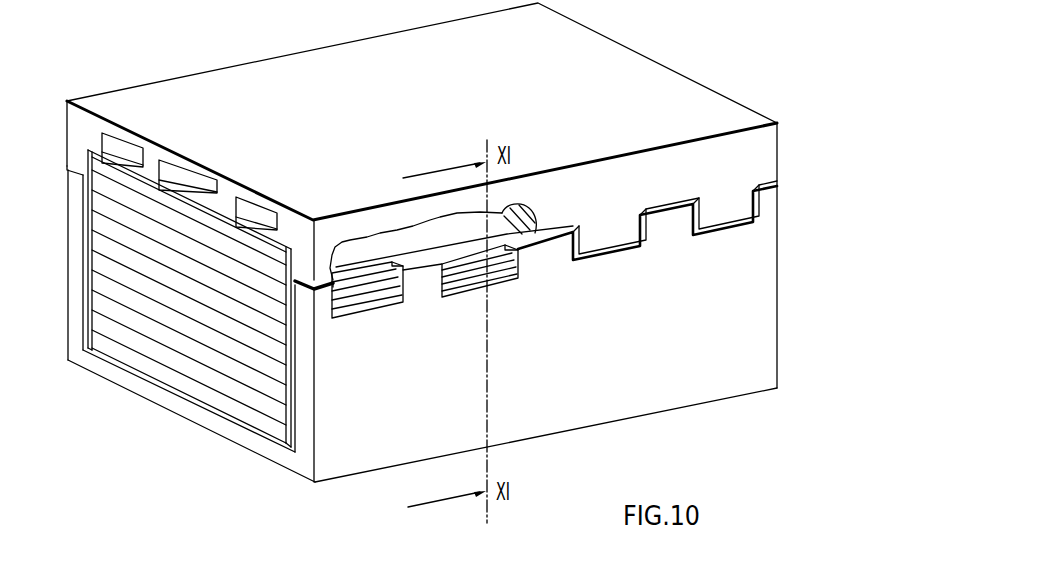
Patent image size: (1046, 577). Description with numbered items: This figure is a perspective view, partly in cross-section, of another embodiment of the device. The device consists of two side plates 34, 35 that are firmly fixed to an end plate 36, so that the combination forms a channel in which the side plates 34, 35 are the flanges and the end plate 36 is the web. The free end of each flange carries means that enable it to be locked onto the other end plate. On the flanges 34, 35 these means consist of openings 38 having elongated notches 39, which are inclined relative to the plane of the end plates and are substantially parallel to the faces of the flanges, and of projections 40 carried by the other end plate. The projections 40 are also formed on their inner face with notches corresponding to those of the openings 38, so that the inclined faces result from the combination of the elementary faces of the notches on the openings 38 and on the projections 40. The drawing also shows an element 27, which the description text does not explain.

The top cover wall of housing 27 is at (187, 98).
The side plate 34 is at (80, 273).
The side plate 35 is at (303, 365).
The end plate 36 is at (195, 408).
The openings 38 is at (505, 278).
The elongated notches 39 is at (470, 265).
The projections 40 is at (622, 240).